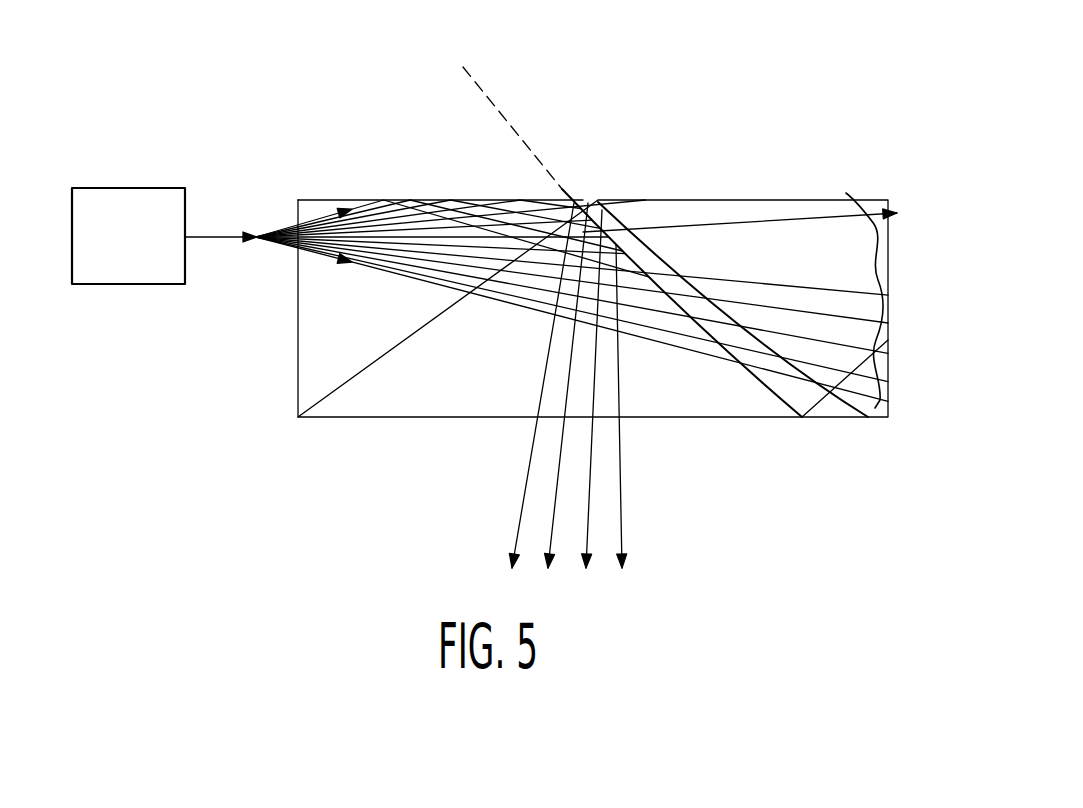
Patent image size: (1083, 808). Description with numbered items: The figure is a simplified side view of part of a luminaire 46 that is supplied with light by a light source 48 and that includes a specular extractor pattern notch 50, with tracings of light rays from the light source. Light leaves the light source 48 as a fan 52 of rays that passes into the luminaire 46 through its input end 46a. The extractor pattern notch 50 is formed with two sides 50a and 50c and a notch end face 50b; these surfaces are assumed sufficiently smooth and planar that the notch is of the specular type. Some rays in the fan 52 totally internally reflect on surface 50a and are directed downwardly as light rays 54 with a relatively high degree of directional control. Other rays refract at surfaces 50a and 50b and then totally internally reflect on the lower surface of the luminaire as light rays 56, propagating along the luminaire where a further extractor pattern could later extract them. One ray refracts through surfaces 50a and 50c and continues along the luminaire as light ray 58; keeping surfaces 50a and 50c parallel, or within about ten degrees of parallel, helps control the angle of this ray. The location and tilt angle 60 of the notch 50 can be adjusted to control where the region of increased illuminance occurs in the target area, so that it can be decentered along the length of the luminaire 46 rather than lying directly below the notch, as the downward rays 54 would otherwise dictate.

The luminaire 46 is at (805, 138).
The input end 46a is at (298, 345).
The light source 48 is at (112, 188).
The specular extractor pattern notch 50 is at (588, 147).
The side of notch 50a is at (578, 198).
The notch end face 50b is at (627, 257).
The side of notch 50c is at (596, 200).
The fan of light rays 52 is at (266, 230).
The light rays 54 is at (522, 500).
The light rays 56 is at (792, 380).
The light ray 58 is at (846, 193).
The tilt angle 60 is at (493, 103).